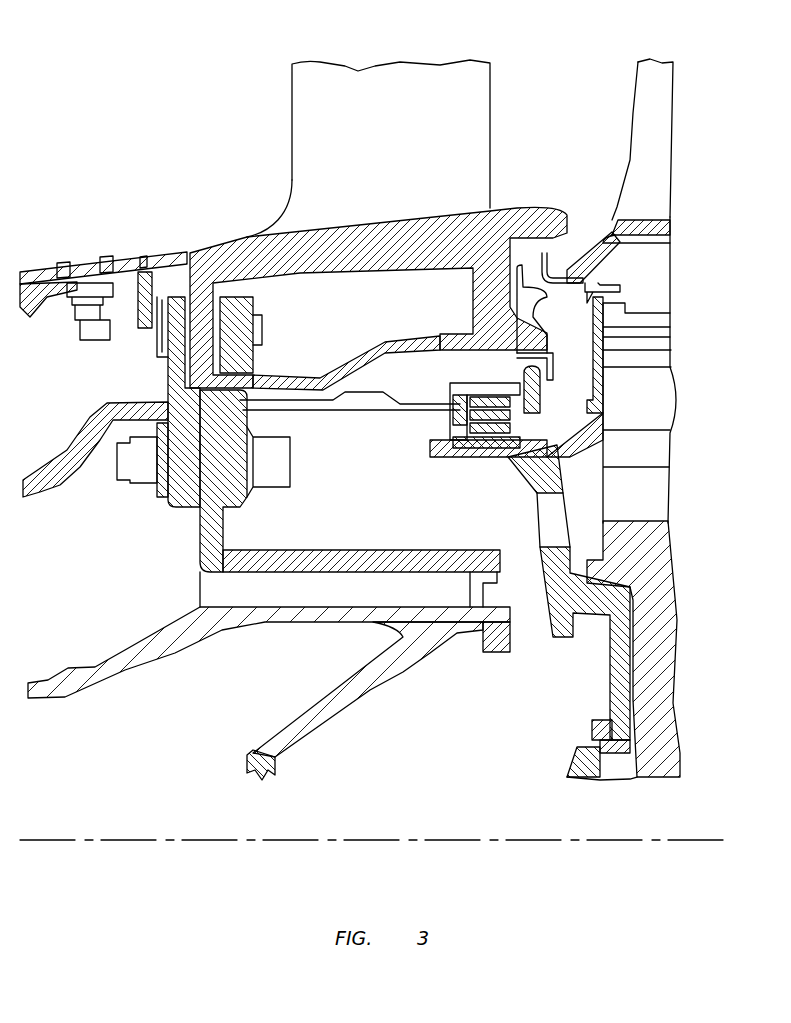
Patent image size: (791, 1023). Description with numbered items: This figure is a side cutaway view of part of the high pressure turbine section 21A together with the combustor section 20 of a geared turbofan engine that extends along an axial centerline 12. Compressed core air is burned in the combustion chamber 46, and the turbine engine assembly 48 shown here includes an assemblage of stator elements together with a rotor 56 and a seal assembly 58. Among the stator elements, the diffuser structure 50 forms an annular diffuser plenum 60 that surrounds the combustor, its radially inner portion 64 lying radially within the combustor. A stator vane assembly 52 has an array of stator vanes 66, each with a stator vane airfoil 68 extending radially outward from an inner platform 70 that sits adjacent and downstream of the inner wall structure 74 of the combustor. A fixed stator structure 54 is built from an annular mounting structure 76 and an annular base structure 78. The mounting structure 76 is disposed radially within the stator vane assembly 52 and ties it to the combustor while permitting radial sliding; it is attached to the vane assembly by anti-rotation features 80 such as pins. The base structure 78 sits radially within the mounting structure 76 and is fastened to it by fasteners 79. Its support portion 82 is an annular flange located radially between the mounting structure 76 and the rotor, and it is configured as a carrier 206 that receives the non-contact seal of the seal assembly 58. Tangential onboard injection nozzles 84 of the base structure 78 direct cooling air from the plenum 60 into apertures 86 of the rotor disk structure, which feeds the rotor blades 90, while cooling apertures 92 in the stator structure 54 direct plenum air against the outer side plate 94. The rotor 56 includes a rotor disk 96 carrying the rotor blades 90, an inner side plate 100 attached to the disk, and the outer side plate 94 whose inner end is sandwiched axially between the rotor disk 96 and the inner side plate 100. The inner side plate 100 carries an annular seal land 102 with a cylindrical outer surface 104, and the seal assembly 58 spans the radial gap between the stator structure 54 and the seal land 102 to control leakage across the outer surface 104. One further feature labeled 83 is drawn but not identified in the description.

The axial centerline 12 is at (545, 842).
The combustor section 20 is at (169, 90).
The high pressure turbine (HPT) section 21A is at (606, 72).
The combustion chamber 46 is at (74, 190).
The turbine engine assembly 48 is at (82, 76).
The diffuser structure 50 is at (141, 749).
The stator vane assembly 52 is at (408, 130).
The fixed stator structure 54 is at (170, 512).
The rotor 56 is at (654, 498).
The seal assembly 58 is at (548, 413).
The annular diffuser plenum 60 is at (266, 693).
The radially inner portion 64 is at (266, 693).
The stator vanes 66 is at (408, 130).
The stator vane airfoil 68 is at (495, 90).
The inner platform 70 is at (545, 210).
The inner wall structure 74 is at (121, 252).
The annular mounting structure 76 is at (163, 386).
The annular base structure 78 is at (318, 498).
The fasteners 79 is at (290, 475).
The anti-rotation features 80 is at (262, 334).
The support portion 82 is at (346, 339).
The support column 83 is at (550, 513).
The tangential onboard injection (TOBI) nozzles 84 is at (205, 542).
The apertures 86 is at (553, 592).
The rotor blades 90 is at (637, 151).
The cooling apertures 92 is at (546, 363).
The outer side plate 94 is at (607, 385).
The rotor disk 96 is at (685, 641).
The inner side plate 100 is at (553, 592).
The annular seal land 102 is at (467, 463).
The cylindrical outer surface 104 is at (440, 437).
The carrier 206 is at (430, 340).